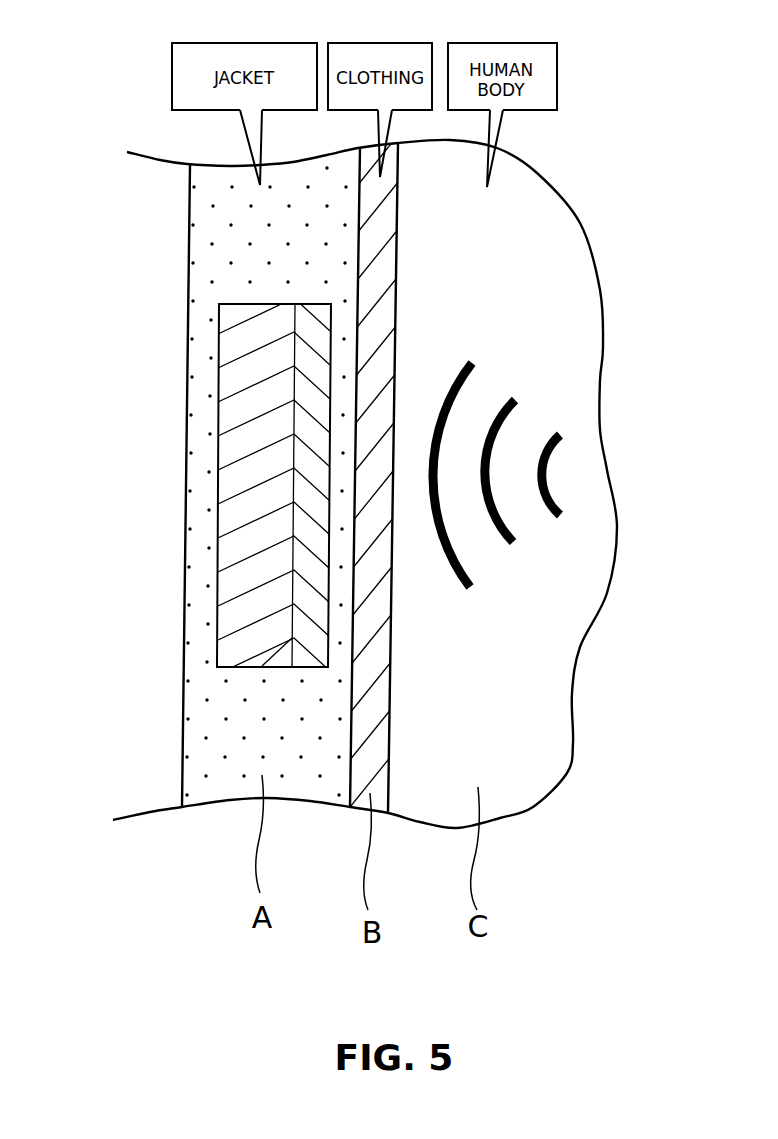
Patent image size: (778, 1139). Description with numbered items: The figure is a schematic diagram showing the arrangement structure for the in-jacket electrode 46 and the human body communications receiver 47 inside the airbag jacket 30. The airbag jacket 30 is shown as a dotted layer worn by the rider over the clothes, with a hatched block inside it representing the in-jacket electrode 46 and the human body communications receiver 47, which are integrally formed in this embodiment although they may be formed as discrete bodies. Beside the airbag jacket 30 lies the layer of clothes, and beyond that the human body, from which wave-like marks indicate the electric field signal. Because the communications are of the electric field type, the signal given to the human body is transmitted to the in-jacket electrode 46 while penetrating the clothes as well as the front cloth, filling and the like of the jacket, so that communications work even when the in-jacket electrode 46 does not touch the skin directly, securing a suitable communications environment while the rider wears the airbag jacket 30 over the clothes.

The airbag jacket 30 is at (182, 723).
The in-jacket electrode 46 is at (307, 303).
The human body communications receiver 47 is at (218, 402).